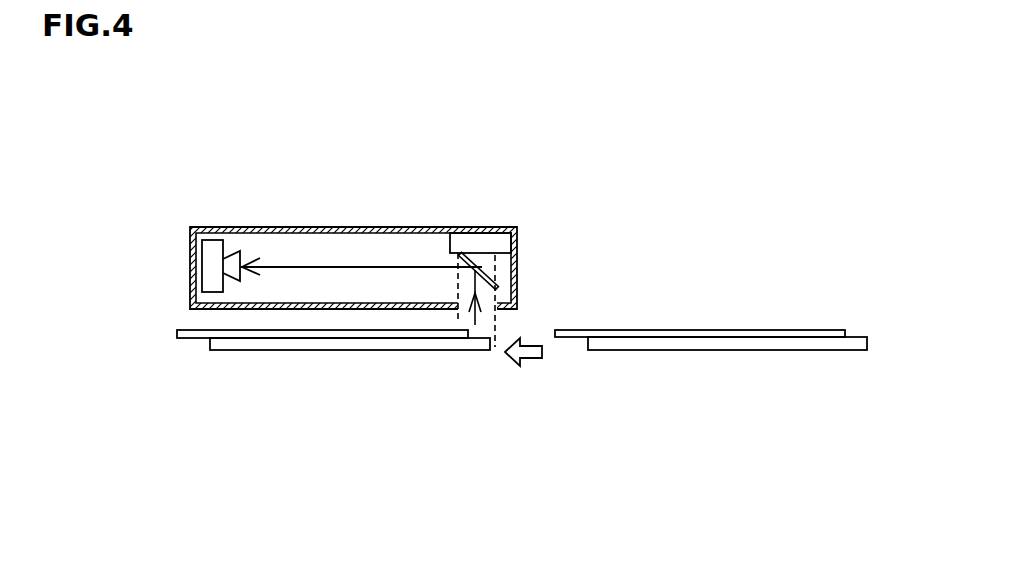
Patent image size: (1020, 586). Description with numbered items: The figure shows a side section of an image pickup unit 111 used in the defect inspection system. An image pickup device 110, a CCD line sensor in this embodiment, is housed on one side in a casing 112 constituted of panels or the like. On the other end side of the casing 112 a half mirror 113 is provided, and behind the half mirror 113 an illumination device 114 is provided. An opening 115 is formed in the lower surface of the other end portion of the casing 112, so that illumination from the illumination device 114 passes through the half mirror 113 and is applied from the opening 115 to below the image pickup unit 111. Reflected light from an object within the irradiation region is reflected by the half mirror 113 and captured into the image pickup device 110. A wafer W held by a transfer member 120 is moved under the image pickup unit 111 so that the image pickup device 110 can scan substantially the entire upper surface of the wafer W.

The image pickup device 110 is at (215, 248).
The image pickup unit 111 is at (375, 160).
The casing 112 is at (517, 240).
The half mirror 113 is at (489, 268).
The illumination device 114 is at (495, 240).
The opening 115 is at (489, 303).
The transfer member 120 is at (308, 351).
The wafer W is at (195, 339).